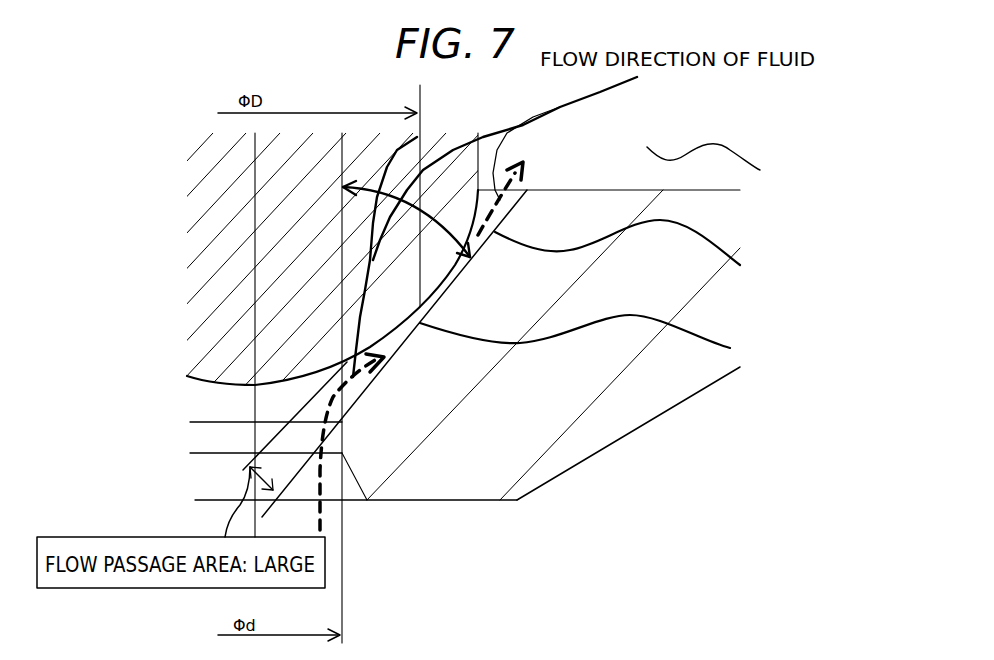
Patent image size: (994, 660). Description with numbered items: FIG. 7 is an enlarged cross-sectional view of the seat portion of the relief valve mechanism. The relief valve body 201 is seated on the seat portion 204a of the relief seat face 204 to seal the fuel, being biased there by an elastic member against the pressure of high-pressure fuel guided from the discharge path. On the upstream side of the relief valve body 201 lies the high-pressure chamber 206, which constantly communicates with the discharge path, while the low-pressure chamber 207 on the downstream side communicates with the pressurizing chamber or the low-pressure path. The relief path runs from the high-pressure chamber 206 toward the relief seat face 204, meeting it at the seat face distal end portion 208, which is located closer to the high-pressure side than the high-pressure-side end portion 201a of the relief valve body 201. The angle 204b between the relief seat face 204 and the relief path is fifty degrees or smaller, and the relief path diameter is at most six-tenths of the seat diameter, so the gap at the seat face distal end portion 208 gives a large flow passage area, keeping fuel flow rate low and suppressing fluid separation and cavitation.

The relief valve body 201 is at (208, 293).
The high-pressure-side end portion 201a is at (250, 383).
The relief seat face 204 is at (740, 265).
The seat portion 204a is at (730, 348).
The angle between relief seat face and relief path 204b is at (429, 226).
The high-pressure chamber 206 is at (208, 517).
The low-pressure chamber 207 is at (760, 170).
The seat face distal end portion 208 is at (343, 421).